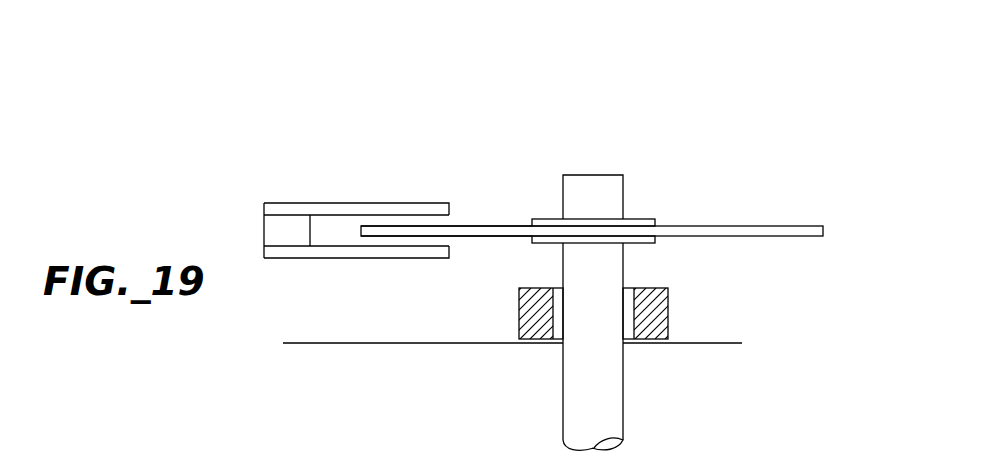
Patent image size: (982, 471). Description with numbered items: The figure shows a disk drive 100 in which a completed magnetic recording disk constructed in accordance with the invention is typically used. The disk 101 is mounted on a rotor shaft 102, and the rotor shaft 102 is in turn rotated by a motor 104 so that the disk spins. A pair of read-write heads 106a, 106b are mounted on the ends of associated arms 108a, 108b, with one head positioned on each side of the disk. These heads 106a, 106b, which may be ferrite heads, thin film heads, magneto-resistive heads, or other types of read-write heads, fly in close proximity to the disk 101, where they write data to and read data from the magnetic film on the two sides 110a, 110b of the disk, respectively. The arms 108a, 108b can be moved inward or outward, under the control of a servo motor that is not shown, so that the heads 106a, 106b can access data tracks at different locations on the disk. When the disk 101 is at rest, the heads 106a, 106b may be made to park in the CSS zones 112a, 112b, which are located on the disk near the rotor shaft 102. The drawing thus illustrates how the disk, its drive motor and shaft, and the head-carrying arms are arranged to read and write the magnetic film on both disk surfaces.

The disk drive 100 is at (706, 102).
The disk 101 is at (748, 226).
The rotor shaft 102 is at (623, 272).
The motor 104 is at (668, 312).
The read-write head 106a is at (442, 220).
The read-write head 106b is at (446, 246).
The arm 108a is at (353, 203).
The arm 108b is at (353, 258).
The side of disk 110a is at (489, 226).
The side of disk 110b is at (489, 237).
The CSS zone 112a is at (531, 243).
The CSS zone 112b is at (645, 220).